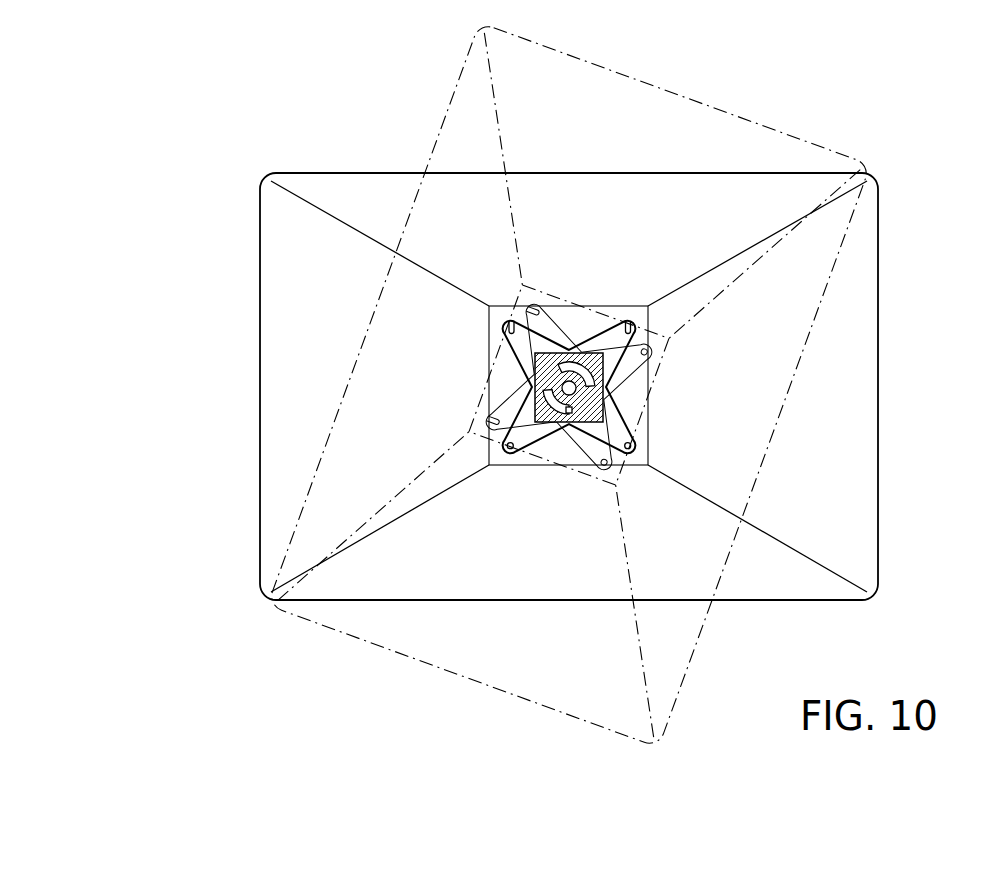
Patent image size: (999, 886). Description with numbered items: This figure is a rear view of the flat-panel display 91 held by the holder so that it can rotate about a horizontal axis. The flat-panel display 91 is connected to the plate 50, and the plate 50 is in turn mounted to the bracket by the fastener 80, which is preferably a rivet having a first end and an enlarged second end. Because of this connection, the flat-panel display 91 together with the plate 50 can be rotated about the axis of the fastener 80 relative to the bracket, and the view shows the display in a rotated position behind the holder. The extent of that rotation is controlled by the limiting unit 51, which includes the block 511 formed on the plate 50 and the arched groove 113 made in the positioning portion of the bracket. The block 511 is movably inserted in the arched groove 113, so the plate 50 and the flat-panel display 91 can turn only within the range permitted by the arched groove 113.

The flat-panel display 91 is at (248, 300).
The plate 50 is at (606, 313).
The limiting unit 51 is at (535, 405).
The block 511 is at (535, 370).
The arched groove 113 is at (606, 383).
The fastener 80 is at (583, 394).